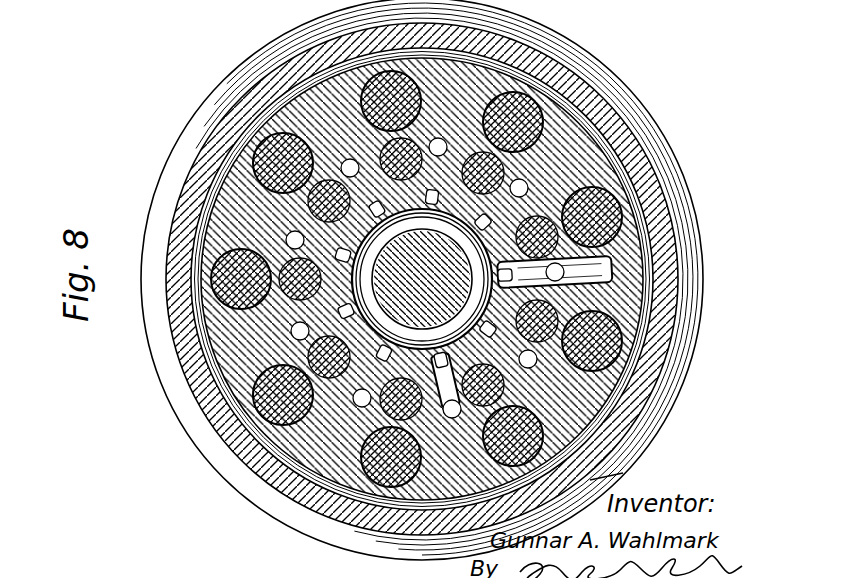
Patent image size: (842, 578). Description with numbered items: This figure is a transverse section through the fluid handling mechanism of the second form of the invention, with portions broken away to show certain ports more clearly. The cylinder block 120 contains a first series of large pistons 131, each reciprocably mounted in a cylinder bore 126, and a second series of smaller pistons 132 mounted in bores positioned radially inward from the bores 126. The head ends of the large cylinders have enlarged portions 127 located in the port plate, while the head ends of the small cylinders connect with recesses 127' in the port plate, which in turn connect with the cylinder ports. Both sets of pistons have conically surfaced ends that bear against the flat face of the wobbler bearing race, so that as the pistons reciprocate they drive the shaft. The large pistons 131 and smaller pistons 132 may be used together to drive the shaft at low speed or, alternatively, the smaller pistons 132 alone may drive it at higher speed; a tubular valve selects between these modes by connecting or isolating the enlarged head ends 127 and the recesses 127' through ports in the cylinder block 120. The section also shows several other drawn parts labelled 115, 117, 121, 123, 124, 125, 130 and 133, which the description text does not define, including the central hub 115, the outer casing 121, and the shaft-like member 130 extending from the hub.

The hub shaft 115 is at (422, 279).
The planet ball 117 is at (406, 462).
The cylinder block 120 is at (585, 125).
The outer casing 121 is at (672, 376).
The roller 123 is at (477, 148).
The pin 124 is at (439, 406).
The roller 125 is at (507, 392).
The cylinder bore 126 is at (333, 173).
The enlarged portion 127 is at (448, 279).
The recess 127' is at (446, 279).
The shaft 130 is at (560, 232).
The large piston 131 is at (600, 213).
The smaller piston 132 is at (527, 85).
The retainer pins 133 is at (518, 82).